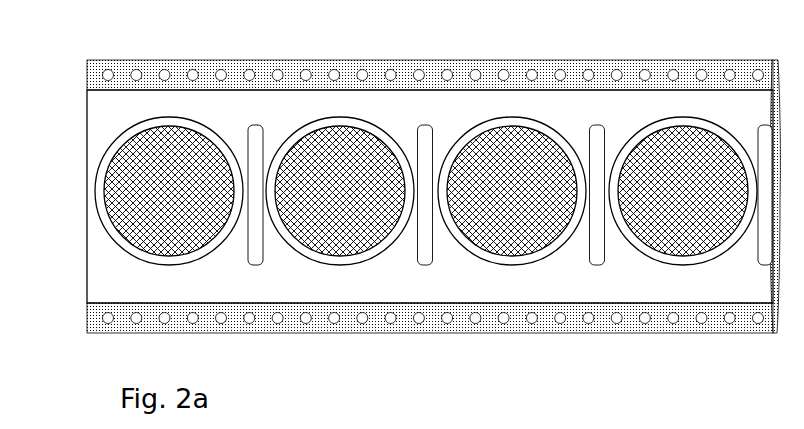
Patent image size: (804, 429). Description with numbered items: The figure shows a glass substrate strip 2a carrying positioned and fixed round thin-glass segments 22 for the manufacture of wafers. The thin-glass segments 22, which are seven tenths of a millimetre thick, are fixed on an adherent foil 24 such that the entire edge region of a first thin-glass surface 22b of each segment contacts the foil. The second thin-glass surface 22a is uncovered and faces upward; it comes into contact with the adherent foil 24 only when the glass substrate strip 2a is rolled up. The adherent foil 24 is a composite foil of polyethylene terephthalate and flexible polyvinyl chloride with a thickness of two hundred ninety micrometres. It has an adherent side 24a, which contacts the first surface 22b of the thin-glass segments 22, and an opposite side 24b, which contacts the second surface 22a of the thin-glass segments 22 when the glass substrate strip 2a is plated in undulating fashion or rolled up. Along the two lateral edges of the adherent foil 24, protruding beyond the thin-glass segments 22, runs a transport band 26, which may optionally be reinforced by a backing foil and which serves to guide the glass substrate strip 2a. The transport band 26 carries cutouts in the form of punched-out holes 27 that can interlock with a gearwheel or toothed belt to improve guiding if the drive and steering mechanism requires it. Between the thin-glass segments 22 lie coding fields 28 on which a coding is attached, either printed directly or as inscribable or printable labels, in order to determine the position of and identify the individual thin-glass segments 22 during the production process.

The glass substrate strip 2a is at (403, 220).
The thin-glass segments 22 is at (138, 191).
The second thin-glass surface 22a is at (96, 200).
The first thin-glass surface 22b is at (100, 219).
The adherent foil 24 is at (403, 178).
The adherent side 24a is at (88, 276).
The opposite side 24b is at (97, 240).
The transport band 26 is at (430, 57).
The punched-out holes 27 is at (222, 69).
The coding fields 28 is at (416, 127).